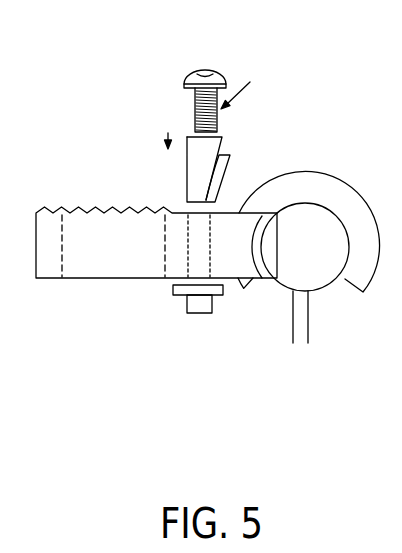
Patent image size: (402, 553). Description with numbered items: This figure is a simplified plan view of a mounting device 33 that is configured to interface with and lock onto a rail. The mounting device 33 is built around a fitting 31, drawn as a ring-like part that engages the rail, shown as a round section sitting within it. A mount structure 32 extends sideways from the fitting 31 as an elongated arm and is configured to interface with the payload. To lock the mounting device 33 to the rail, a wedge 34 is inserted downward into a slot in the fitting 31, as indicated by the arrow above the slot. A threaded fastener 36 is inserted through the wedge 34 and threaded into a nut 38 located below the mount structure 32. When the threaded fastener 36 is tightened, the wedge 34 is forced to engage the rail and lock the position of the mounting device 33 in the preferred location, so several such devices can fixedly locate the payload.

The fitting 31 is at (352, 188).
The mount structure 32 is at (92, 212).
The mounting device 33 is at (201, 379).
The wedge 34 is at (188, 121).
The threaded fastener 36 is at (221, 70).
The nut 38 is at (199, 313).